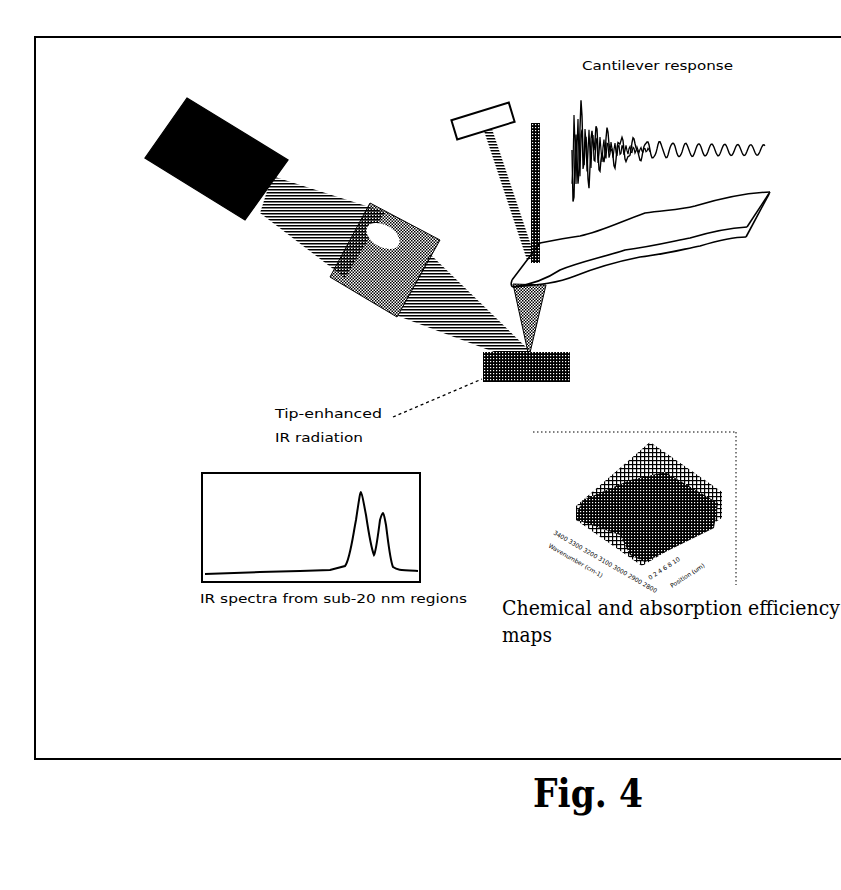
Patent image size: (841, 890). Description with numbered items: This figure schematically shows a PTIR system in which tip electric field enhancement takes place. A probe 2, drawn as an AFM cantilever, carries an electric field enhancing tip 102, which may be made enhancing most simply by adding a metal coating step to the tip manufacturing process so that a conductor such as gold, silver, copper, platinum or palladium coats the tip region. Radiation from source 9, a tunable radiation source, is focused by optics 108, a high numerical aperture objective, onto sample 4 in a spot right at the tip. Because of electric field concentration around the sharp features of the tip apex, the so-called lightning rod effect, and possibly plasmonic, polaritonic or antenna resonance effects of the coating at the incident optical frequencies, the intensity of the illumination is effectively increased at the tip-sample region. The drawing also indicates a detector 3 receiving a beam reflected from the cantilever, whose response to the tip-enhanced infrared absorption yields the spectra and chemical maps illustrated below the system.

The source 9 is at (213, 200).
The detector 3 is at (495, 102).
The optics 108 is at (363, 297).
The electric field enhancing tip 102 is at (540, 318).
The probe 2 is at (683, 253).
The sample 4 is at (567, 382).